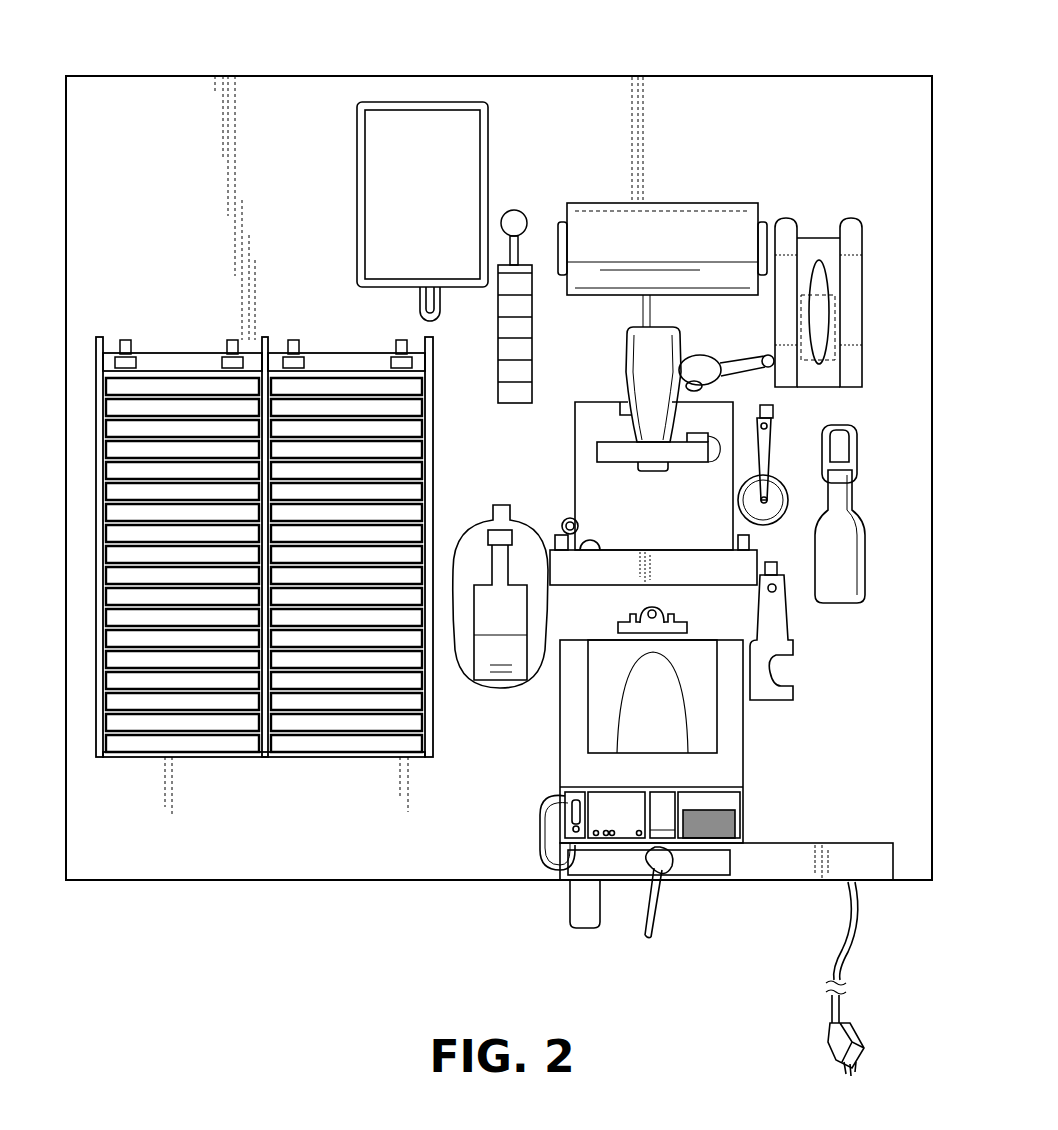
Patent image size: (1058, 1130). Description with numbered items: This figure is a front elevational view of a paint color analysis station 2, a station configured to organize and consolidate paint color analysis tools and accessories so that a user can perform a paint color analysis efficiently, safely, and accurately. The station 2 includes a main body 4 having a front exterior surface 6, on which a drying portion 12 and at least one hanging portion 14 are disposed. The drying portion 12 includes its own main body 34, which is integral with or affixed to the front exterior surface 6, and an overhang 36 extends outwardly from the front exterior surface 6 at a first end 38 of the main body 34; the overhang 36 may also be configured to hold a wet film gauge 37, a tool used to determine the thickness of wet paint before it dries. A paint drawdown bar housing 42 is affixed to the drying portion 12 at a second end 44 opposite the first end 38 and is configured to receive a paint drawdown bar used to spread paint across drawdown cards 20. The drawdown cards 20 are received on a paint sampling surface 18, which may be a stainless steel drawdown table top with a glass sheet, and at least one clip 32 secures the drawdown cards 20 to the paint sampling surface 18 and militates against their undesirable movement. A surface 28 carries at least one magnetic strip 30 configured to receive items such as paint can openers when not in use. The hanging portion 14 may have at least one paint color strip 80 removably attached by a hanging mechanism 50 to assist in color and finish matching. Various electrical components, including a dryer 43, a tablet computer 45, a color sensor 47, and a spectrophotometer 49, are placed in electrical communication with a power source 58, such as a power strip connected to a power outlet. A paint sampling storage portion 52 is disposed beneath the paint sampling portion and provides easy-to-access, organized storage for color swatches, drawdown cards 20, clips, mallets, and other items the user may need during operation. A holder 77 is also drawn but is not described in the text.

The paint color analysis station 2 is at (842, 52).
The main body 4 is at (168, 168).
The front exterior surface 6 is at (332, 108).
The drying portion 12 is at (748, 557).
The hanging portion 14 is at (665, 158).
The paint sampling surface 18 is at (573, 776).
The drawdown cards 20 is at (600, 714).
The surface 28 is at (671, 878).
The magnetic strip 30 is at (710, 873).
The clip 32 is at (690, 639).
The main body of the drying portion 34 is at (583, 423).
The overhang 36 is at (613, 460).
The wet film gauge 37 is at (705, 434).
The first end 38 is at (598, 400).
The paint drawdown bar housing 42 is at (587, 575).
The dryer 43 is at (420, 106).
The second end 44 is at (621, 600).
The tablet computer 45 is at (655, 335).
The color sensor 47 is at (766, 501).
The spectrophotometer 49 is at (566, 530).
The hanging mechanism 50 is at (125, 340).
The paint sampling storage portion 52 is at (553, 815).
The power source 58 is at (848, 886).
The holder 77 is at (862, 268).
The paint color strip 80 is at (532, 348).